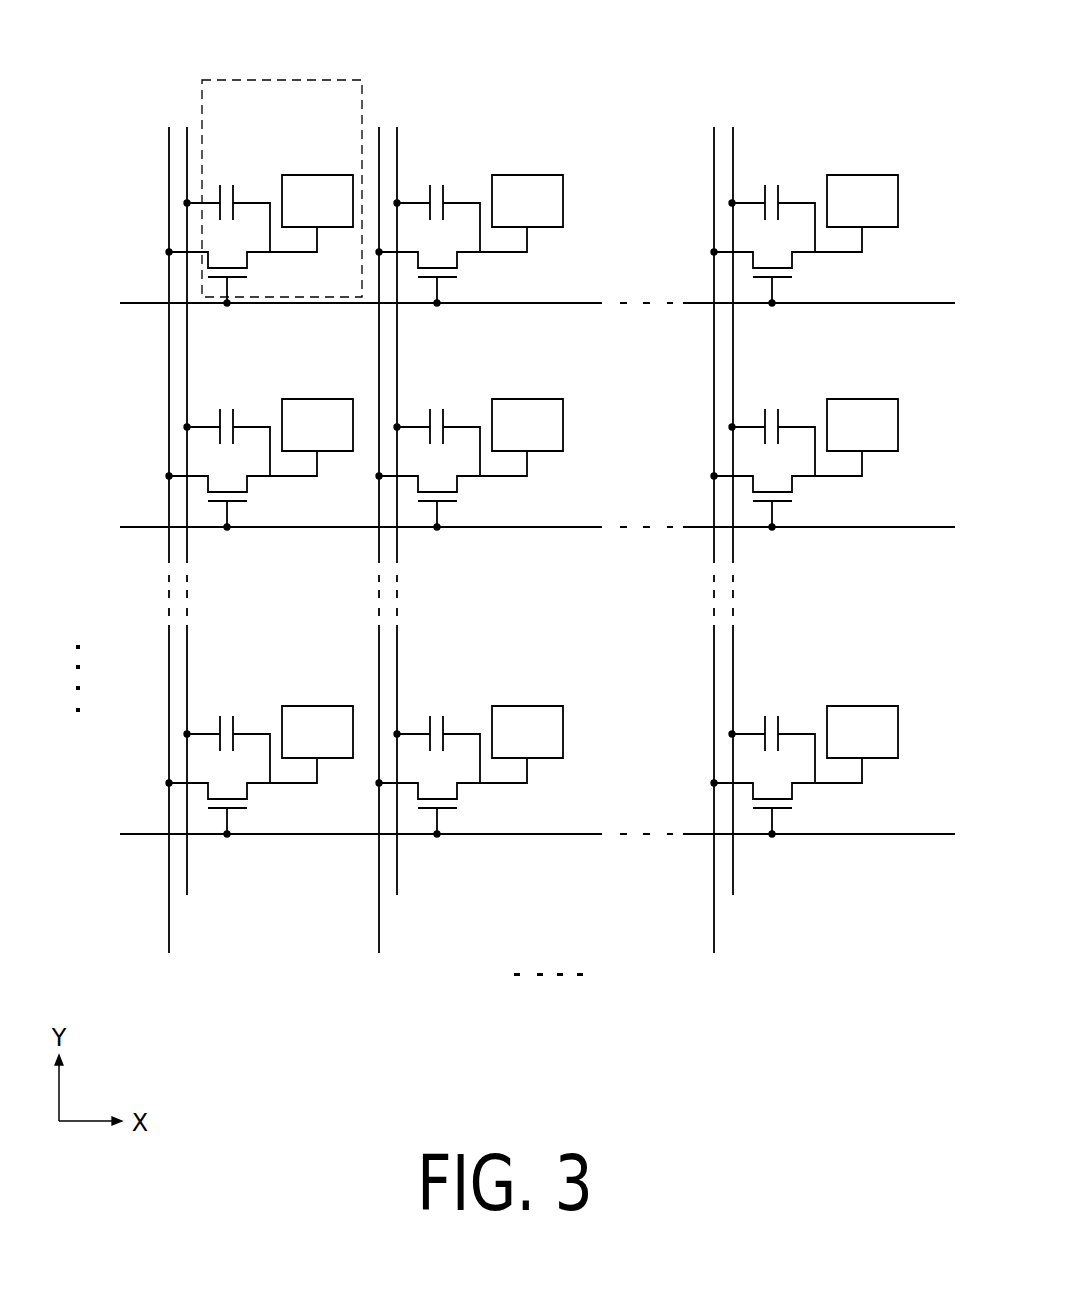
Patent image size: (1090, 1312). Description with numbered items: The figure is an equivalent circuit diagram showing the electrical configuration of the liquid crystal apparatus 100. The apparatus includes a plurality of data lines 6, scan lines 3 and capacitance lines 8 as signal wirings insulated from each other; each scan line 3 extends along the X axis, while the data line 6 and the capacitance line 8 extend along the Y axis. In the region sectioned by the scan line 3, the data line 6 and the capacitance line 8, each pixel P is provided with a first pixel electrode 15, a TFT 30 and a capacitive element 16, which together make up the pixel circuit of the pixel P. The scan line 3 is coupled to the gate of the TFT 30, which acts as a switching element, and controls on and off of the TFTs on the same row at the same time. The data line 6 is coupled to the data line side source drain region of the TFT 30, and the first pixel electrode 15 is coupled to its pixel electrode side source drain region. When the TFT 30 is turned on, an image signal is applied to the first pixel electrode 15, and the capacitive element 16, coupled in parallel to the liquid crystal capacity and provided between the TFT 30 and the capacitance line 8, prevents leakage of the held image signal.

The scan line 3 is at (938, 834).
The data line 6 is at (753, 918).
The capacitance line 8 is at (772, 876).
The first pixel electrode 15 is at (863, 716).
The capacitive element 16 is at (772, 704).
The TFT 30 is at (804, 803).
The pixel P is at (285, 79).
The liquid crystal apparatus 100 is at (693, 92).